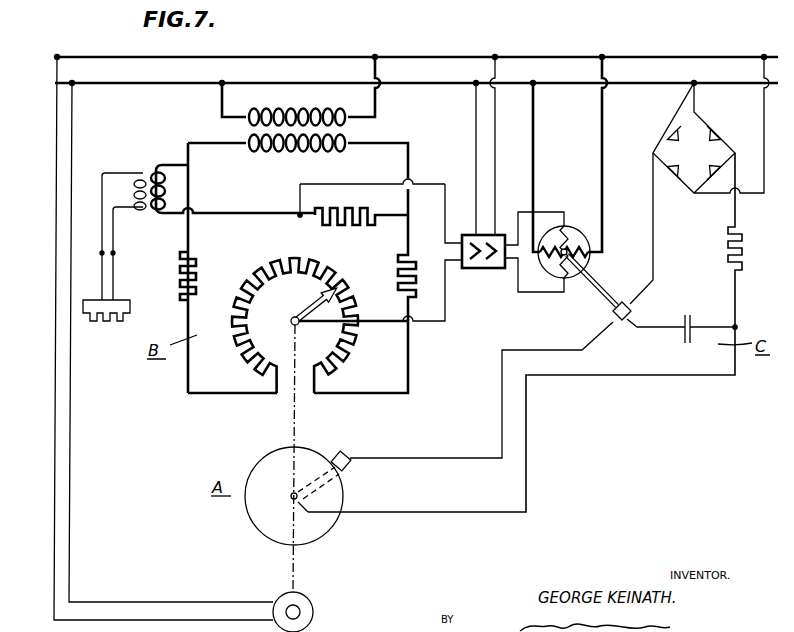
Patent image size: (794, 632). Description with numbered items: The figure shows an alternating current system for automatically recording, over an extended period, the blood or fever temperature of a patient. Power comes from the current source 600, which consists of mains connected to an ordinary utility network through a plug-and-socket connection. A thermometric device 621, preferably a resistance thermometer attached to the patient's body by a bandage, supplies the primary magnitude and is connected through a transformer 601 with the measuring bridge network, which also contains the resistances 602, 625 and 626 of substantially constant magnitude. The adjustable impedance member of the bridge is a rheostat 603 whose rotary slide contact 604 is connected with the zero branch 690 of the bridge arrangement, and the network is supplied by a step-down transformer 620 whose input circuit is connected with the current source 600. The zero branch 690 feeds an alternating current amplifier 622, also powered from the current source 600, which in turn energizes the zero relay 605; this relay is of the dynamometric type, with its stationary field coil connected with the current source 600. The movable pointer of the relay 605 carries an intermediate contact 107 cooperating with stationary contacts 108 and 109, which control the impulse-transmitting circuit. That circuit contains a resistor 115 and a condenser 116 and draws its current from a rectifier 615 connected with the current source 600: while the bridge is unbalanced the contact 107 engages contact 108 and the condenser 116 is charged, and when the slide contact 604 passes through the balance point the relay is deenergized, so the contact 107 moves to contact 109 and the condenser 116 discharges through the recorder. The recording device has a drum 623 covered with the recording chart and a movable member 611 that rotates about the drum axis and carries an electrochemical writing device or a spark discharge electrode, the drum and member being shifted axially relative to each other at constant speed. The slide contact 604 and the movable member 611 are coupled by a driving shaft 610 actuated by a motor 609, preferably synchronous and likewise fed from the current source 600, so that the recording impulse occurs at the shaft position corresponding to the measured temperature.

The current source 600 is at (56, 49).
The transformer 601 is at (148, 168).
The resistance 602 is at (366, 208).
The rheostat 603 is at (258, 273).
The rotary slide contact 604 is at (305, 303).
The zero relay 605 is at (573, 227).
The motor 609 is at (306, 601).
The driving shaft 610 is at (292, 418).
The movable member 611 is at (337, 452).
The rectifier 615 is at (663, 147).
The step-down transformer 620 is at (355, 133).
The thermometric device 621 is at (110, 286).
The alternating current amplifier 622 is at (500, 233).
The drum 623 is at (333, 494).
The resistance 625 is at (182, 263).
The resistance 626 is at (403, 258).
The zero branch 690 is at (427, 183).
The intermediate contact 107 is at (633, 311).
The stationary contact 108 is at (628, 299).
The stationary contact 109 is at (612, 322).
The resistor 115 is at (743, 243).
The condenser 116 is at (684, 346).